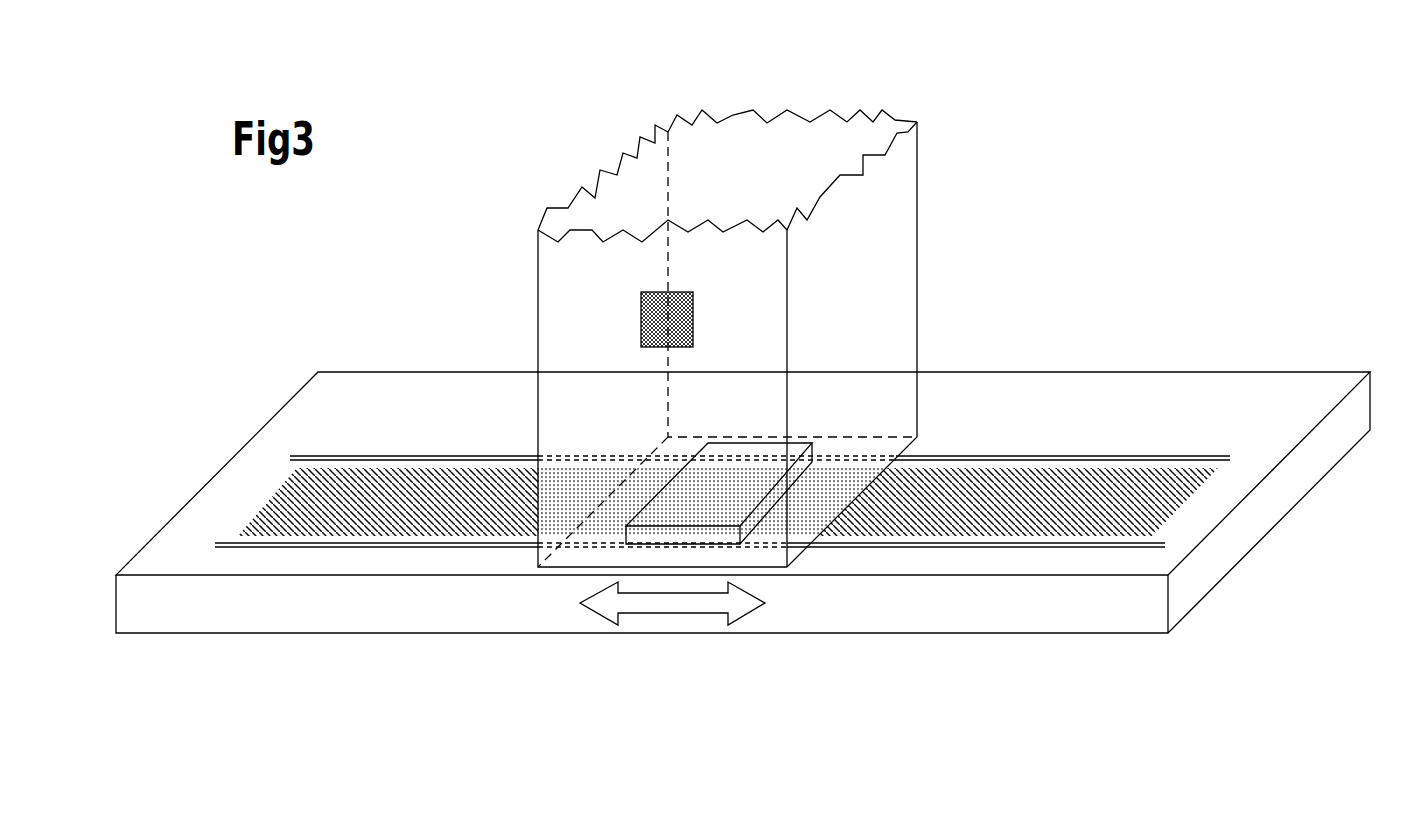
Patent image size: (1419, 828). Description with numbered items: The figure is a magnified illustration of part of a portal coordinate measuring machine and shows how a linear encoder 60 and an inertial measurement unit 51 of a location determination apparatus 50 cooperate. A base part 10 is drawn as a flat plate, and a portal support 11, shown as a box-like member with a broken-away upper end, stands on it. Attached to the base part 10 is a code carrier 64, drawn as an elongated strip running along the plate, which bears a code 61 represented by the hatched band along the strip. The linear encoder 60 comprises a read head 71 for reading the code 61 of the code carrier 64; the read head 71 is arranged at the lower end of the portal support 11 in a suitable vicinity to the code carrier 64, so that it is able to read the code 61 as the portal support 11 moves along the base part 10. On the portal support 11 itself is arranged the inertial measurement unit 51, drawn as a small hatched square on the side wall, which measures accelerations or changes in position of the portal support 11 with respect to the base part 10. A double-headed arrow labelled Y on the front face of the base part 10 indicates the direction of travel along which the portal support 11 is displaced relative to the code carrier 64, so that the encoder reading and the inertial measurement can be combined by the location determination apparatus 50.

The base part 10 is at (277, 440).
The portal support 11 is at (567, 373).
The location determination apparatus 50 is at (983, 130).
The inertial measurement unit 51 is at (660, 320).
The linear encoder 60 is at (843, 445).
The code 61 is at (1015, 503).
The code carrier 64 is at (1222, 458).
The read head 71 is at (755, 458).
The direction of movement Y is at (668, 610).